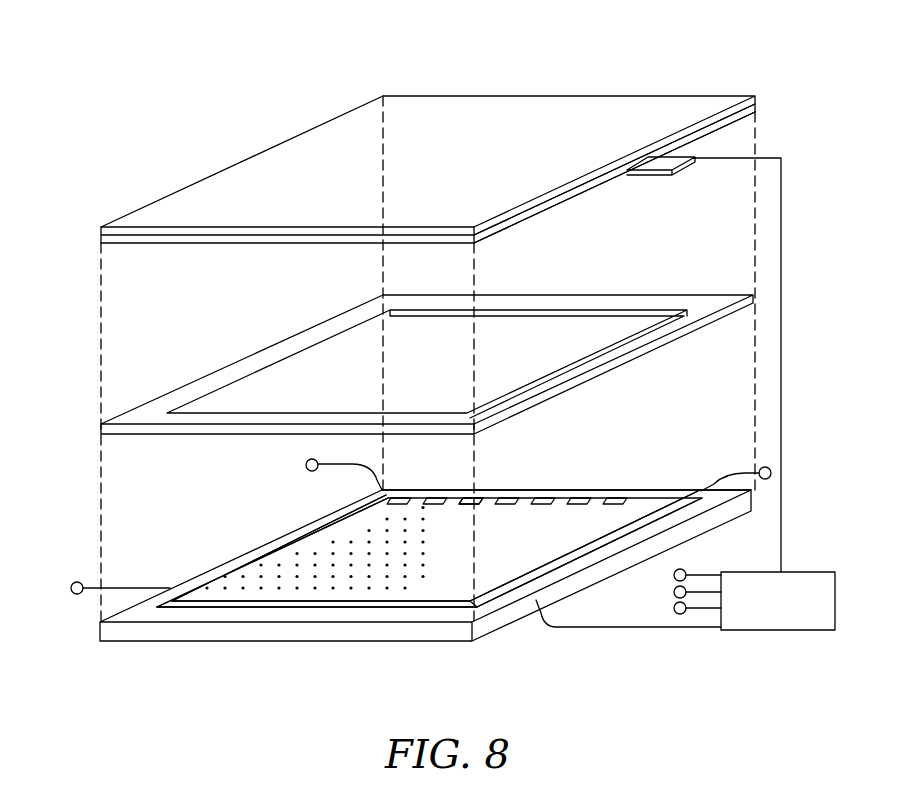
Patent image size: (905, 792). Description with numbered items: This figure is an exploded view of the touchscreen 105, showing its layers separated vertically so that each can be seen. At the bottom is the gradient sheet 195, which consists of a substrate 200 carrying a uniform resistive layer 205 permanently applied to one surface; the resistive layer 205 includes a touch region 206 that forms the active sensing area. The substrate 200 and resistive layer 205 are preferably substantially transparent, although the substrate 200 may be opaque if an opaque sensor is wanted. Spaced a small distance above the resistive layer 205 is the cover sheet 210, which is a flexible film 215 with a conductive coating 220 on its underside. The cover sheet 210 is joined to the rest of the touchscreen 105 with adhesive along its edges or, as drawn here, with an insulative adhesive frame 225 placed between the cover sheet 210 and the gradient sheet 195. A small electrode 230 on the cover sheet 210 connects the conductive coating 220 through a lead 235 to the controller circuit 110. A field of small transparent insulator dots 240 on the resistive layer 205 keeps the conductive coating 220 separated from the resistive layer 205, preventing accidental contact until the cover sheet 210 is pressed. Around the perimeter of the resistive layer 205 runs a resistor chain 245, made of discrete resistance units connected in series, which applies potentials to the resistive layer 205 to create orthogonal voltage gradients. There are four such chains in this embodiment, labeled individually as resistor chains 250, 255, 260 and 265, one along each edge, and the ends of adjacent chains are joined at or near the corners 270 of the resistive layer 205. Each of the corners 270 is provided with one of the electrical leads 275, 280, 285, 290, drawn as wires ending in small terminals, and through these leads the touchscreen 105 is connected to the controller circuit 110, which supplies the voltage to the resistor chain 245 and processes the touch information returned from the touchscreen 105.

The touchscreen 105 is at (628, 66).
The controller circuit 110 is at (806, 572).
The gradient sheet 195 is at (609, 490).
The substrate 200 is at (143, 632).
The resistive layer 205 is at (402, 574).
The touch region 206 is at (345, 587).
The cover sheet 210 is at (470, 180).
The flexible film 215 is at (612, 180).
The conductive coating 220 is at (556, 212).
The insulative adhesive frame 225 is at (576, 390).
The electrode 230 is at (660, 176).
The lead 235 is at (787, 272).
The insulator dots 240 is at (240, 580).
The resistor chain 245 is at (580, 497).
The resistor chain 250 is at (462, 497).
The resistor chain 255 is at (268, 548).
The resistor chain 260 is at (249, 616).
The resistor chain 265 is at (568, 553).
The corners 270 is at (473, 607).
The electrical lead 275 is at (625, 630).
The electrical lead 280 is at (767, 466).
The electrical lead 285 is at (306, 467).
The electrical lead 290 is at (77, 581).